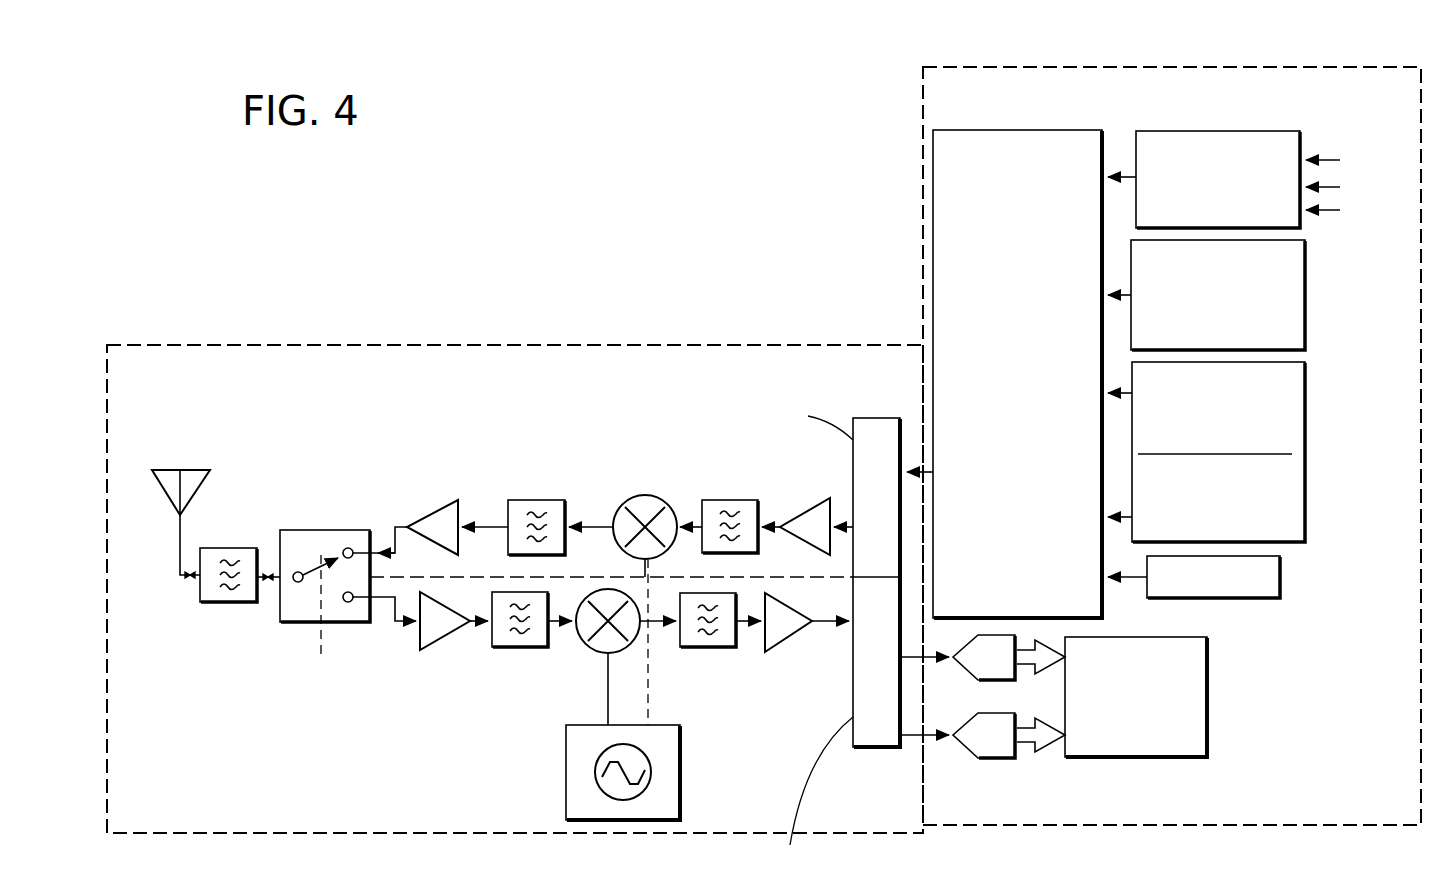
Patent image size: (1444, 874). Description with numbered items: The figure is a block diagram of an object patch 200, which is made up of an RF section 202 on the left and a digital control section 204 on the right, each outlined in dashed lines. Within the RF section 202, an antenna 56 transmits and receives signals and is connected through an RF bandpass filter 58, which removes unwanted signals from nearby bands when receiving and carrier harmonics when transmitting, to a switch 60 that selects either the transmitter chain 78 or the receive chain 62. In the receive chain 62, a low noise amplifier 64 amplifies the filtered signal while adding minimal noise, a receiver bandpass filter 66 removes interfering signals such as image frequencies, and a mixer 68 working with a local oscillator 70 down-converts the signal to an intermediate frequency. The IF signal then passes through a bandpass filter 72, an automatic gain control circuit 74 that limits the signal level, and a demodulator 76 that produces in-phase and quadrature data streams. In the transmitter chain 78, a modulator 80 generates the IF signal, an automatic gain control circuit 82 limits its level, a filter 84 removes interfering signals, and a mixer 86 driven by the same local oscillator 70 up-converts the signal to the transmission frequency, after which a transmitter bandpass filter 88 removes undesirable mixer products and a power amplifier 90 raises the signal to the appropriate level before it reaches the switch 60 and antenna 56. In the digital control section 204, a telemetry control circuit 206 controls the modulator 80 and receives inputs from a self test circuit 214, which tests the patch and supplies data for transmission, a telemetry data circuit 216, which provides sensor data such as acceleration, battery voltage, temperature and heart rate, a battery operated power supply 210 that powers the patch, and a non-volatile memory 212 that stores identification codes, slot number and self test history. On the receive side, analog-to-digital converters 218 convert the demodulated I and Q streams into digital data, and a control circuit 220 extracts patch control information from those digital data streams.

The object patch 200 is at (550, 135).
The RF section 202 is at (383, 345).
The digital control section 204 is at (1150, 67).
The antenna 56 is at (200, 470).
The RF bandpass filter 58 is at (229, 548).
The switch 60 is at (318, 530).
The receive chain 62 is at (518, 710).
The low noise amplifier 64 is at (433, 648).
The receiver bandpass filter 66 is at (507, 650).
The mixer 68 is at (584, 647).
The local oscillator 70 is at (680, 806).
The bandpass filter 72 is at (708, 648).
The automatic gain control circuit 74 is at (785, 650).
The demodulator 76 is at (888, 748).
The transmitter chain 78 is at (590, 440).
The modulator 80 is at (880, 418).
The automatic gain control circuit 82 is at (805, 500).
The filter 84 is at (730, 500).
The mixer 86 is at (645, 495).
The transmitter bandpass filter 88 is at (533, 500).
The power amplifier 90 is at (426, 511).
The telemetry control circuit 206 is at (1017, 374).
The battery operated power supply 210 is at (1311, 477).
The non-volatile memory 212 is at (1286, 578).
The self test circuit 214 is at (1215, 131).
The telemetry data circuit 216 is at (1311, 294).
The analog-to-digital converters 218 is at (1000, 760).
The control circuit 220 is at (1137, 760).